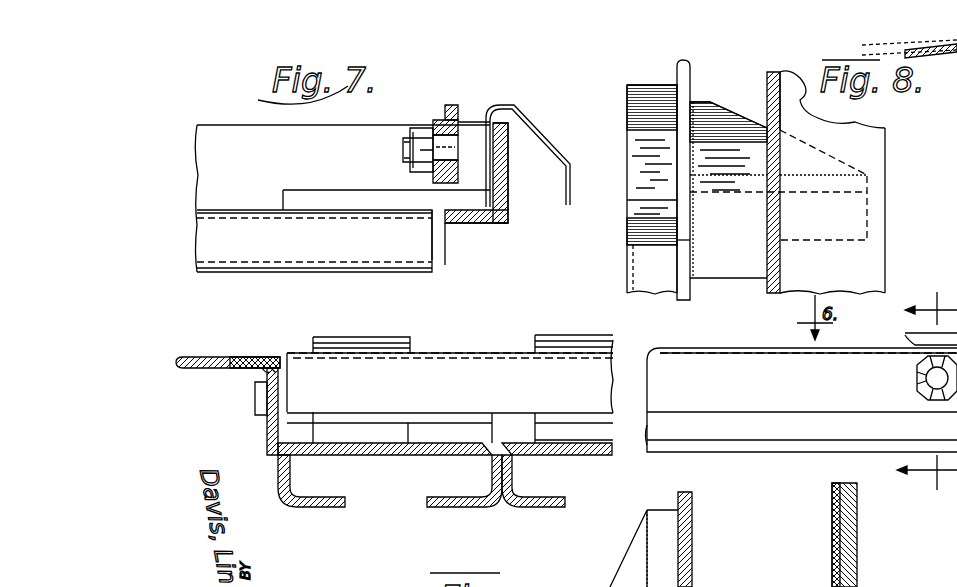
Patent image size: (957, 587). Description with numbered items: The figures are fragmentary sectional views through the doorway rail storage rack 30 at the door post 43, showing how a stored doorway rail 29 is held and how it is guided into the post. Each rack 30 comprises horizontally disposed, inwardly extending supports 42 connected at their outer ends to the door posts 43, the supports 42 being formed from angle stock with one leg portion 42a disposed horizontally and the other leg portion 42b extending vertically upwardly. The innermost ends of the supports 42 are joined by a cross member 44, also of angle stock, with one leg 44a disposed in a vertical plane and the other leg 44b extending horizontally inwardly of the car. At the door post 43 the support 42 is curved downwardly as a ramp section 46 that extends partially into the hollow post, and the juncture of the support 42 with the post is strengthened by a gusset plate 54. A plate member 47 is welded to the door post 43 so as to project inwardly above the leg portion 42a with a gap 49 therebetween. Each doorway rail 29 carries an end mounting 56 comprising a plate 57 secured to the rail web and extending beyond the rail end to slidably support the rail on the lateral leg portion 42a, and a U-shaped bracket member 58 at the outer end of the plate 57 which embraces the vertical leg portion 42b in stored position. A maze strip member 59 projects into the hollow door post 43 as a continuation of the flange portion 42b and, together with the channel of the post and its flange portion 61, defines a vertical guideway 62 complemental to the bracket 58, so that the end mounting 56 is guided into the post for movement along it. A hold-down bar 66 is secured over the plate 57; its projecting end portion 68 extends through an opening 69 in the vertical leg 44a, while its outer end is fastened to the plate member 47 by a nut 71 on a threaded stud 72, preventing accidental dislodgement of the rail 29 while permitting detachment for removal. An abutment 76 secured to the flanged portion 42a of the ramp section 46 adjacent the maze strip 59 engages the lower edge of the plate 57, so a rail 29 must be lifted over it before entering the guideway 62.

In FIG. 7, the doorway rail 29 is at (334, 272).
In FIG. 8, the doorway rail storage rack 30 is at (876, 462).
In FIG. 7, the support 42 is at (508, 195).
In FIG. 7, the horizontal leg portion of support 42a is at (470, 223).
In FIG. 8, the horizontal leg portion of support 42a is at (648, 135).
In FIG. 7, the vertical leg portion of support 42b is at (508, 158).
In FIG. 8, the vertical leg portion of support 42b is at (688, 78).
In FIG. 8, the door post 43 is at (885, 200).
In FIG. 7, the cross member 44 is at (200, 357).
In FIG. 7, the vertical leg of cross member 44a is at (267, 432).
In FIG. 7, the horizontal leg of cross member 44b is at (245, 357).
In FIG. 8, the curved ramp section 46 is at (627, 155).
In FIG. 7, the plate member 47 is at (456, 105).
In FIG. 7, the gap 49 is at (412, 178).
In FIG. 8, the gusset plate 54 is at (720, 115).
In FIG. 7, the end mounting 56 is at (521, 97).
In FIG. 7, the plate member 57 is at (283, 200).
In FIG. 7, the U-shaped bracket member 58 is at (535, 130).
In FIG. 8, the maze strip member 59 is at (690, 293).
In FIG. 8, the flange portion 61 is at (692, 522).
In FIG. 8, the guideway 62 is at (789, 535).
In FIG. 7, the hold-down bar 66 is at (437, 120).
In FIG. 7, the projecting end portion 68 is at (255, 395).
In FIG. 7, the opening 69 is at (260, 372).
In FIG. 7, the nut 71 is at (420, 128).
In FIG. 8, the nut 71 is at (916, 365).
In FIG. 7, the threaded stud 72 is at (405, 130).
In FIG. 8, the abutment 76 is at (627, 217).